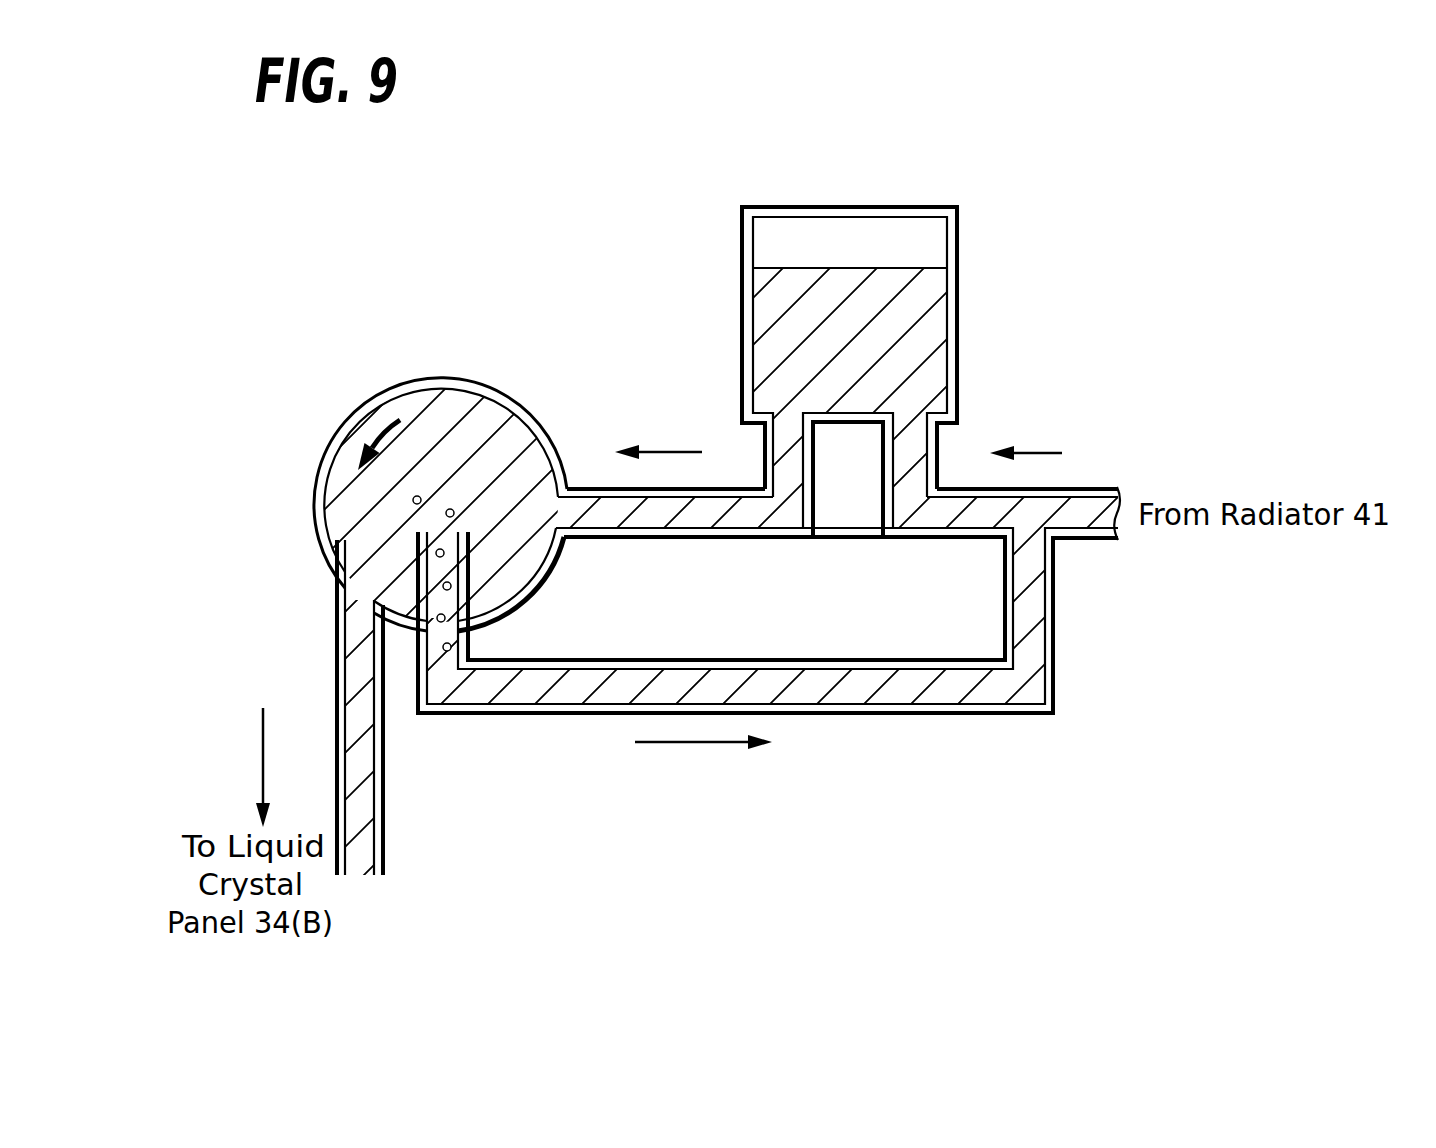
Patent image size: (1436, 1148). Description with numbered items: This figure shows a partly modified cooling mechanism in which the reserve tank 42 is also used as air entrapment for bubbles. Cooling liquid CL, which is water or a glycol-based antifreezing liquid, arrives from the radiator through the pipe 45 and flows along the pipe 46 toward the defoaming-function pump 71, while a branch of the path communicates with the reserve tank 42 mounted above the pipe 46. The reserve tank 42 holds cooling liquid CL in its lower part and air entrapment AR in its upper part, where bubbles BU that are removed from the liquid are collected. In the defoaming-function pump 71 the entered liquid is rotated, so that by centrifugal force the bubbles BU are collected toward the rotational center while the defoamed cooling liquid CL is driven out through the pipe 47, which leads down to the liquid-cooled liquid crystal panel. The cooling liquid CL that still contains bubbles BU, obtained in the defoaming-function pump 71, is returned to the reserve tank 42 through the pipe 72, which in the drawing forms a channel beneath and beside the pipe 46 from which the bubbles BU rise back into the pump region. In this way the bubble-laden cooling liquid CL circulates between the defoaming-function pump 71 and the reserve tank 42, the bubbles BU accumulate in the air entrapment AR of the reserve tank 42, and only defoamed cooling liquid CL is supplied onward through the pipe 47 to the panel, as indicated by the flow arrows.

The reserve tank 42 is at (813, 207).
The pipe 45 is at (1090, 540).
The pipe 46 is at (717, 538).
The pipe 47 is at (387, 827).
The defoaming-function pump 71 is at (424, 378).
The pipe 72 is at (893, 658).
The air entrapment AR is at (937, 237).
The cooling liquid CL is at (927, 328).
The bubbles BU is at (454, 516).